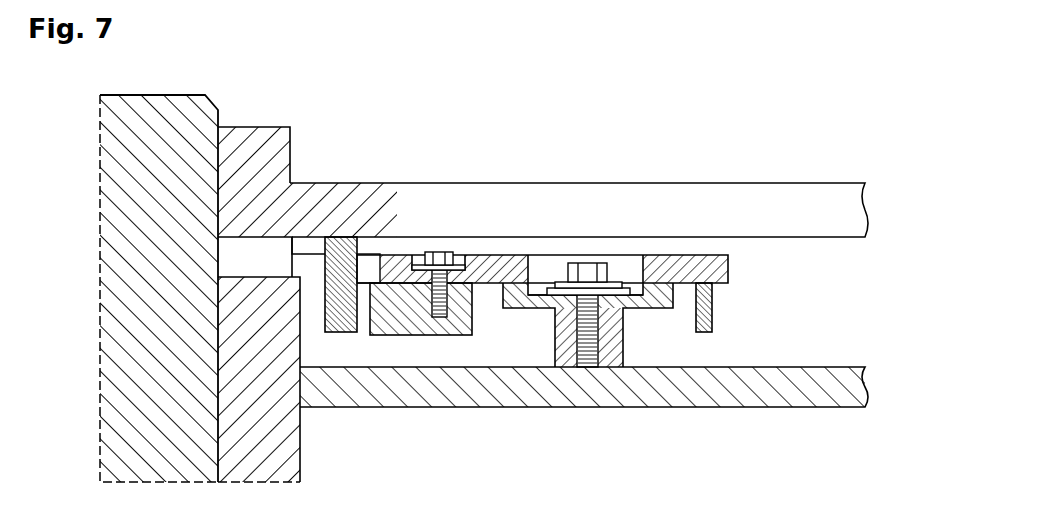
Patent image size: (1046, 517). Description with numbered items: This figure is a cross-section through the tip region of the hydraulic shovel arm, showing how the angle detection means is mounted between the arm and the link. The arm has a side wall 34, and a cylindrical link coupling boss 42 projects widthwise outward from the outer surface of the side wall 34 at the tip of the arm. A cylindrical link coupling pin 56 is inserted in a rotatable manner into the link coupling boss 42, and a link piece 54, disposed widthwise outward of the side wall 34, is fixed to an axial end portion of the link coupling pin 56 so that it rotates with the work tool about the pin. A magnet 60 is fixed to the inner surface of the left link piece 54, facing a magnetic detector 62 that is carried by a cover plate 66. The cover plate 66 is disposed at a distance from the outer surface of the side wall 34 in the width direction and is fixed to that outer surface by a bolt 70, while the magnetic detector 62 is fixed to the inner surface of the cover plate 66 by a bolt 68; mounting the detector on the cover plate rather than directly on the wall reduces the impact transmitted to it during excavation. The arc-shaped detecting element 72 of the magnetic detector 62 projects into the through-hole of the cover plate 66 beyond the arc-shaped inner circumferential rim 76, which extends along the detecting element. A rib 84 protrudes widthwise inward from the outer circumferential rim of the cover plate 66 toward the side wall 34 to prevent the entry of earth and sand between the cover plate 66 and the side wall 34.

The side wall 34 is at (748, 400).
The link coupling boss 42 is at (285, 473).
The link piece 54 is at (523, 192).
The link coupling pin 56 is at (160, 105).
The magnet 60 is at (345, 242).
The magnetic detector 62 is at (450, 330).
The cover plate 66 is at (733, 269).
The bolt 68 is at (440, 251).
The bolt 70 is at (587, 262).
The arc-shaped detecting element 72 is at (365, 313).
The arc-shaped inner circumferential rim 76 is at (370, 257).
The rib 84 is at (712, 315).